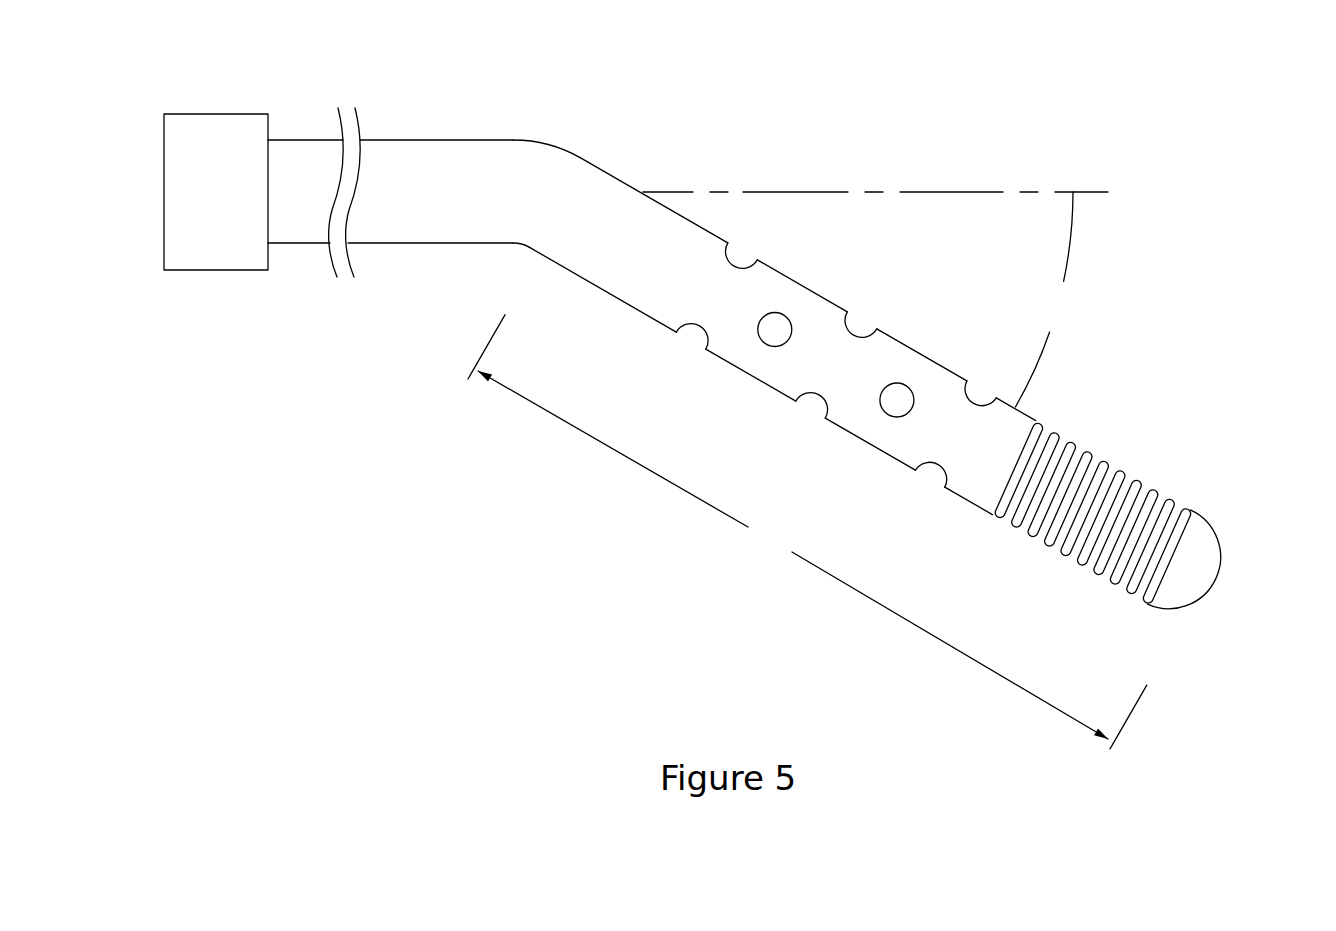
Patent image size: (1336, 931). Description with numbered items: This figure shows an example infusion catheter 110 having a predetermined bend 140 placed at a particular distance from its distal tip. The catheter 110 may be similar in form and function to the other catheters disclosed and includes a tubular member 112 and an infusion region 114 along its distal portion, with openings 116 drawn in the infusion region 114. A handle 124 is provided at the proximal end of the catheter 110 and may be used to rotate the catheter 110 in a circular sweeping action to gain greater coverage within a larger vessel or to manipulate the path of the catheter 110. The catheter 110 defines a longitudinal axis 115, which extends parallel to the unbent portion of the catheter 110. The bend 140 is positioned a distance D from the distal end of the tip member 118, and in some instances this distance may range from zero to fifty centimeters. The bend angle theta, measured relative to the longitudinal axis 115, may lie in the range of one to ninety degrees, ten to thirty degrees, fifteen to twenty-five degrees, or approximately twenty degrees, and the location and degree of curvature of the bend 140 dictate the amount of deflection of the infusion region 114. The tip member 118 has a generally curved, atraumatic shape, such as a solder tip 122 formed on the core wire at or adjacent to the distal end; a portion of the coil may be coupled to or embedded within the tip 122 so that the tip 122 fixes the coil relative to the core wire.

The infusion catheter 110 is at (733, 383).
The tubular member 112 is at (652, 303).
The infusion region 114 is at (782, 336).
The longitudinal axis 115 is at (955, 190).
The apertures 116 is at (777, 333).
The tip member 118 is at (1151, 518).
The solder tip 122 is at (1198, 573).
The handle 124 is at (217, 113).
The predetermined bend 140 is at (510, 268).